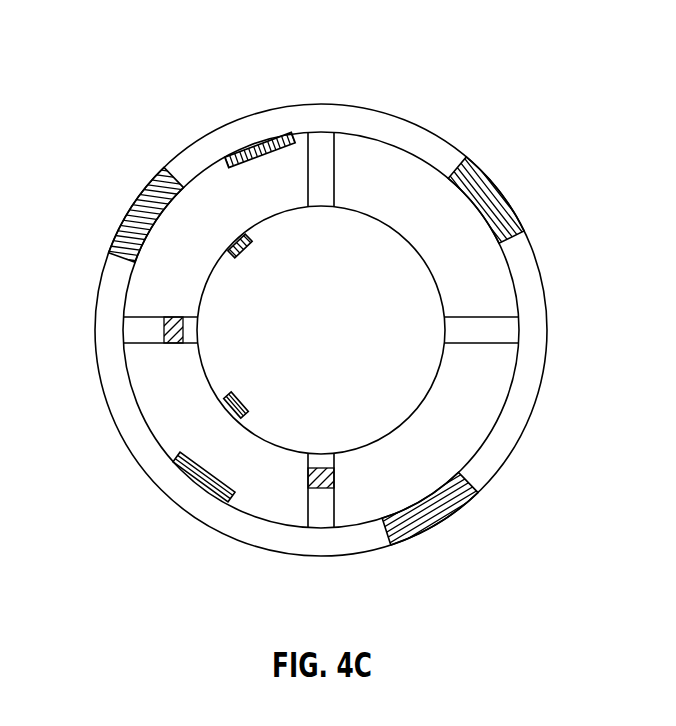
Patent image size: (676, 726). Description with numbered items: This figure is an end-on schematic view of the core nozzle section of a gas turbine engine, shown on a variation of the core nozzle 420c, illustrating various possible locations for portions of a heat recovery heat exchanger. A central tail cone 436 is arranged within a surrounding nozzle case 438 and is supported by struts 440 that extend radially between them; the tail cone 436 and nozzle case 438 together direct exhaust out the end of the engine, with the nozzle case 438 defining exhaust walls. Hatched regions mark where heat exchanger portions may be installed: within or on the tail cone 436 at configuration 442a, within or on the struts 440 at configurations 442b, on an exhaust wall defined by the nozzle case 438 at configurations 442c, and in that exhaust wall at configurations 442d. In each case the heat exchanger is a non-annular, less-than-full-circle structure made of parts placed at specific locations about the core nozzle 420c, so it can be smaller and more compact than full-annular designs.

The core nozzle 420c is at (157, 121).
The nozzle case 438 is at (418, 137).
The tail cone 436 is at (395, 245).
The struts 440 is at (322, 152).
The configuration 442a is at (247, 253).
The configurations 442b is at (178, 316).
The configurations 442c is at (263, 145).
The configurations 442d is at (123, 228).